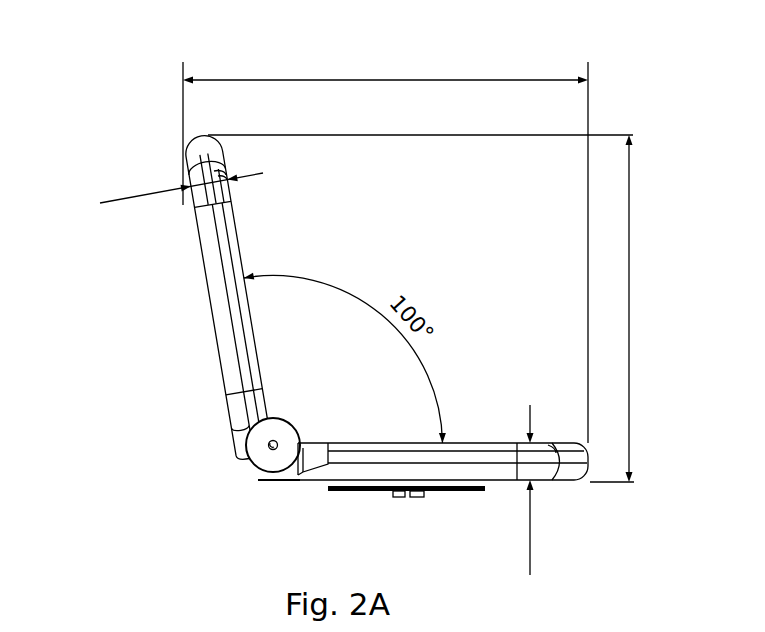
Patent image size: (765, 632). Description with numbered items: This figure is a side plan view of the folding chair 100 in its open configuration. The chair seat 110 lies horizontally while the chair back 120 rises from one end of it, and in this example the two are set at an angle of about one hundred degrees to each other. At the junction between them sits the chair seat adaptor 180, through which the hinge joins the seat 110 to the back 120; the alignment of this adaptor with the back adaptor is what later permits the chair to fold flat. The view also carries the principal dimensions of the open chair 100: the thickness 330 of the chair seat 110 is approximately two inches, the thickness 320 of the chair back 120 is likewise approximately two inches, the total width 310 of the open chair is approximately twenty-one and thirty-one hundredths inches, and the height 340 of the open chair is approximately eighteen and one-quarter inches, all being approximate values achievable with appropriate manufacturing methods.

The folding chair 100 is at (157, 108).
The chair seat 110 is at (362, 478).
The chair back 120 is at (223, 318).
The chair seat adaptor 180 is at (262, 453).
The total width 310 is at (385, 243).
The thickness of the chair back 320 is at (181, 182).
The thickness of the chair seat 330 is at (512, 490).
The height 340 is at (441, 308).